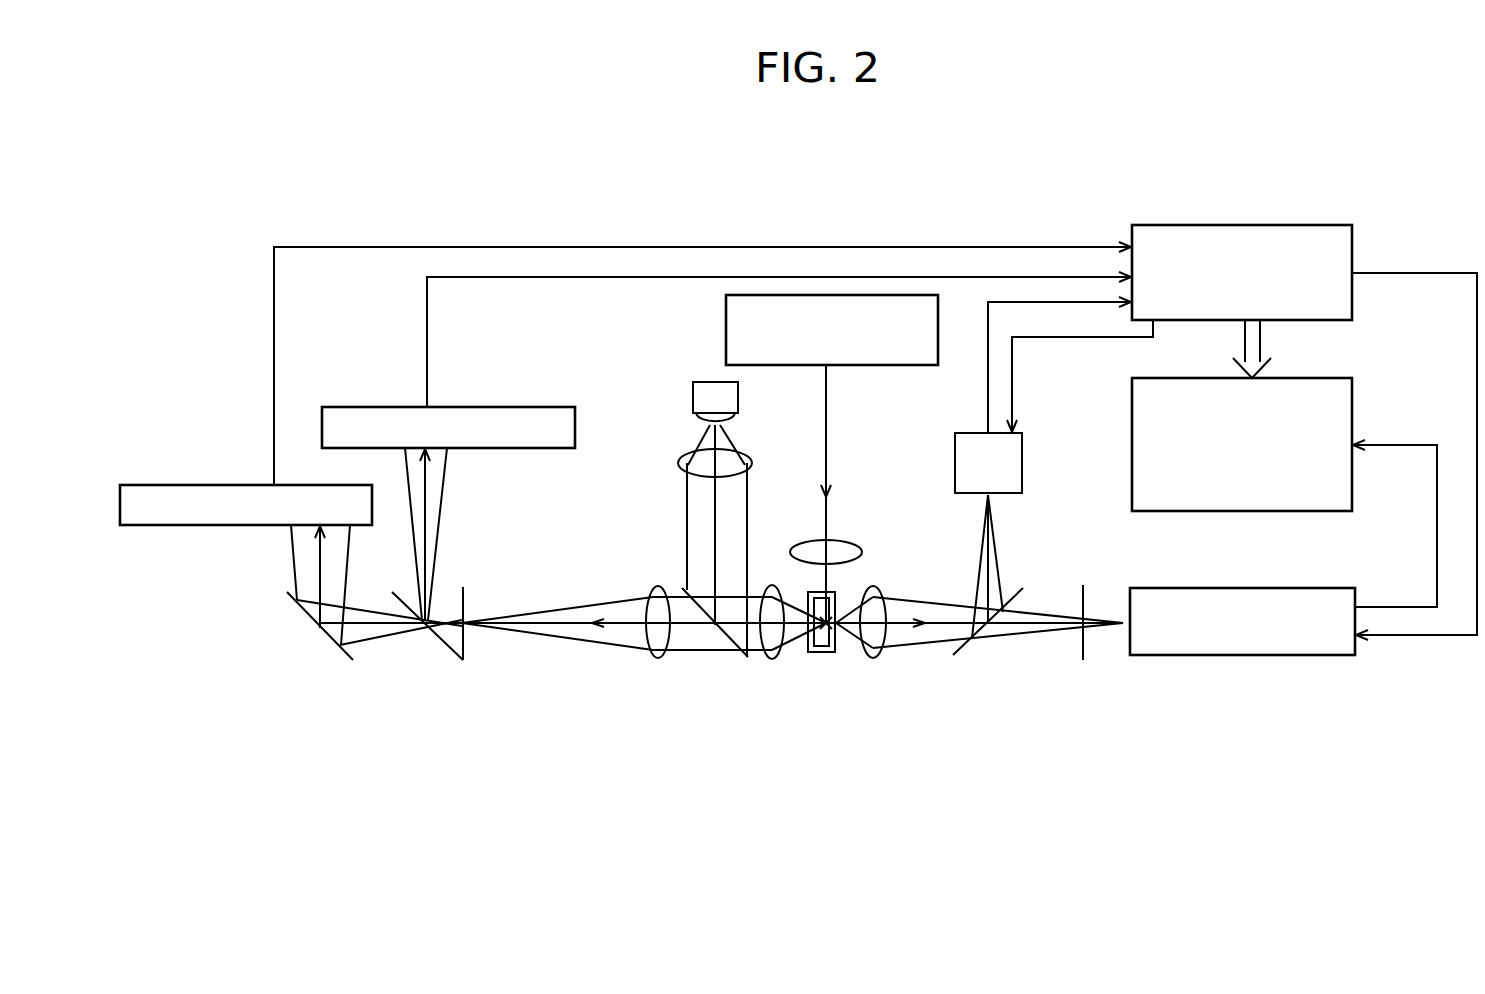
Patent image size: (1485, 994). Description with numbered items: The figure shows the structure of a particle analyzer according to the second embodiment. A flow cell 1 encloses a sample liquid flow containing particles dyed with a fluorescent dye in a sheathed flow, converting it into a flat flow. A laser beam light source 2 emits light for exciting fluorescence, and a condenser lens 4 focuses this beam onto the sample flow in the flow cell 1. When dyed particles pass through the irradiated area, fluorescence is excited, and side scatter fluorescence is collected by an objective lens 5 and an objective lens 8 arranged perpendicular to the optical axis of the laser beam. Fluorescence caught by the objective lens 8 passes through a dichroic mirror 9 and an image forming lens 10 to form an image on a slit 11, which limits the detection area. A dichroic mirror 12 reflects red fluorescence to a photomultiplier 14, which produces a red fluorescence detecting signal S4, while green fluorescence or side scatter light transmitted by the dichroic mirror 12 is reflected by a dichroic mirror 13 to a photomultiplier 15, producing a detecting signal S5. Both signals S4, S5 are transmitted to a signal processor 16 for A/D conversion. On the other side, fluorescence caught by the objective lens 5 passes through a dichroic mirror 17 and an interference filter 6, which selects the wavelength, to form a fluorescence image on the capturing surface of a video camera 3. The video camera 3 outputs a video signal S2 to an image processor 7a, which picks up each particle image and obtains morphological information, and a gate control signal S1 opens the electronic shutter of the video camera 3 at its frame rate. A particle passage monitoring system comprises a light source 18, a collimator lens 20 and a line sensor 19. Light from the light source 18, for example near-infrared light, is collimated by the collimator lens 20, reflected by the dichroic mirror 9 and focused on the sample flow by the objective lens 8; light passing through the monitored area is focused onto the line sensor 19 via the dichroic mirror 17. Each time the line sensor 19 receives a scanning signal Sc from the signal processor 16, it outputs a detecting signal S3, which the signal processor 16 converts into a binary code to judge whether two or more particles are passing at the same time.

The flow cell 1 is at (808, 650).
The laser beam light source 2 is at (938, 303).
The video camera 3 is at (1330, 655).
The condenser lens 4 is at (812, 545).
The objective lens 5 is at (873, 600).
The interference filter 6 is at (1080, 592).
The image processor 7a is at (1317, 378).
The objective lens 8 is at (775, 600).
The dichroic mirror 9 is at (700, 598).
The image forming lens 10 is at (655, 658).
The slit 11 is at (465, 595).
The dichroic mirror 12 is at (450, 650).
The dichroic mirror 13 is at (345, 653).
The photomultiplier 14 is at (537, 407).
The photomultiplier 15 is at (218, 485).
The signal processor 16 is at (1323, 225).
The dichroic mirror 17 is at (968, 645).
The light source 18 is at (690, 395).
The line sensor 19 is at (1022, 450).
The collimator lens 20 is at (685, 457).
The gate control signal S1 is at (1414, 438).
The video signal S2 is at (1395, 523).
The detecting signal S3 is at (1039, 365).
The red fluorescence detecting signal S4 is at (779, 339).
The green fluorescence or side scatter light detecting signal S5 is at (702, 363).
The scanning signal Sc is at (1080, 376).